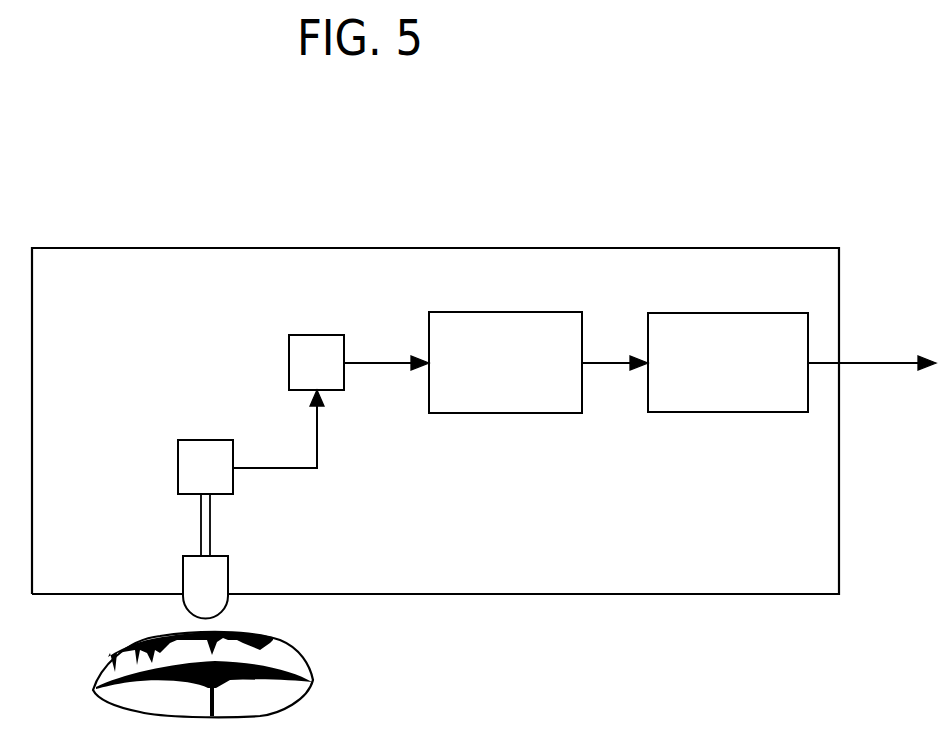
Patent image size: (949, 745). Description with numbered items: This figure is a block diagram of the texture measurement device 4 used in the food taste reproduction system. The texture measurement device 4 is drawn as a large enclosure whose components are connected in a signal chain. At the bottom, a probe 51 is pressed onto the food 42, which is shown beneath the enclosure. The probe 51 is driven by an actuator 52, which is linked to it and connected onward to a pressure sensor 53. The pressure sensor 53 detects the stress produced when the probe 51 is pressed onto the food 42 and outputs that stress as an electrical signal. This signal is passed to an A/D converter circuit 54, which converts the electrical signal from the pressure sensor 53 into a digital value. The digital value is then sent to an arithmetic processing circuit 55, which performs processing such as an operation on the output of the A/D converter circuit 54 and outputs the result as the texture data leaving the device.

The texture measurement device 4 is at (285, 248).
The probe 51 is at (190, 556).
The actuator 52 is at (207, 440).
The pressure sensor 53 is at (310, 335).
The A/D converter circuit 54 is at (466, 312).
The arithmetic processing circuit 55 is at (718, 313).
The food 42 is at (308, 697).